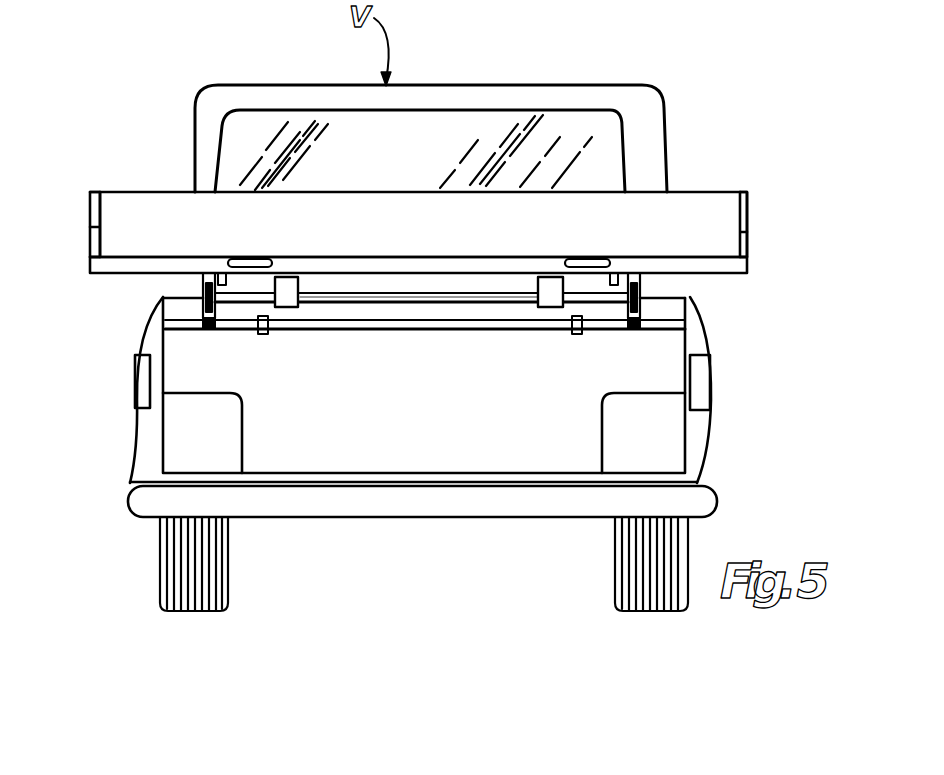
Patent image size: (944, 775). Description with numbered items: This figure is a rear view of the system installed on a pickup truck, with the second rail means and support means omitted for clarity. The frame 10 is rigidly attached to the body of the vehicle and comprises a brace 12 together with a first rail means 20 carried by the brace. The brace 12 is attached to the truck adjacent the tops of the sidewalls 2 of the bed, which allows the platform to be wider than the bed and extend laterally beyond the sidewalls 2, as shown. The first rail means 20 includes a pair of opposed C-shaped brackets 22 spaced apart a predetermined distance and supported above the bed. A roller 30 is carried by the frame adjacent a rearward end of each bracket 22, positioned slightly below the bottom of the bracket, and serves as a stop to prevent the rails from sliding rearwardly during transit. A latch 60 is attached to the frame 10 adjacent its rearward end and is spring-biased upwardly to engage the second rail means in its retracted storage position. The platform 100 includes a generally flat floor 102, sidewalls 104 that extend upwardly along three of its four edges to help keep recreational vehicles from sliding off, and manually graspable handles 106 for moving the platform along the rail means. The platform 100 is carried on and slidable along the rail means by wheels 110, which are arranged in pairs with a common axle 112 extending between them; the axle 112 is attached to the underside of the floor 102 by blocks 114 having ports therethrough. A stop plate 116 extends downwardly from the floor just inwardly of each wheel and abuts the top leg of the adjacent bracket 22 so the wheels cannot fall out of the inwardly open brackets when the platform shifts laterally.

The sidewalls 2 is at (140, 410).
The frame 10 is at (355, 330).
The brace 12 is at (427, 331).
The first rail means 20 is at (648, 288).
The C-shaped brackets 22 is at (206, 320).
The roller 30 is at (210, 330).
The latch 60 is at (263, 334).
The platform 100 is at (746, 210).
The floor 102 is at (728, 265).
The sidewalls 104 is at (126, 194).
The handles 106 is at (246, 260).
The wheels 110 is at (205, 288).
The axle 112 is at (366, 292).
The blocks 114 is at (288, 287).
The stop plate 116 is at (222, 278).